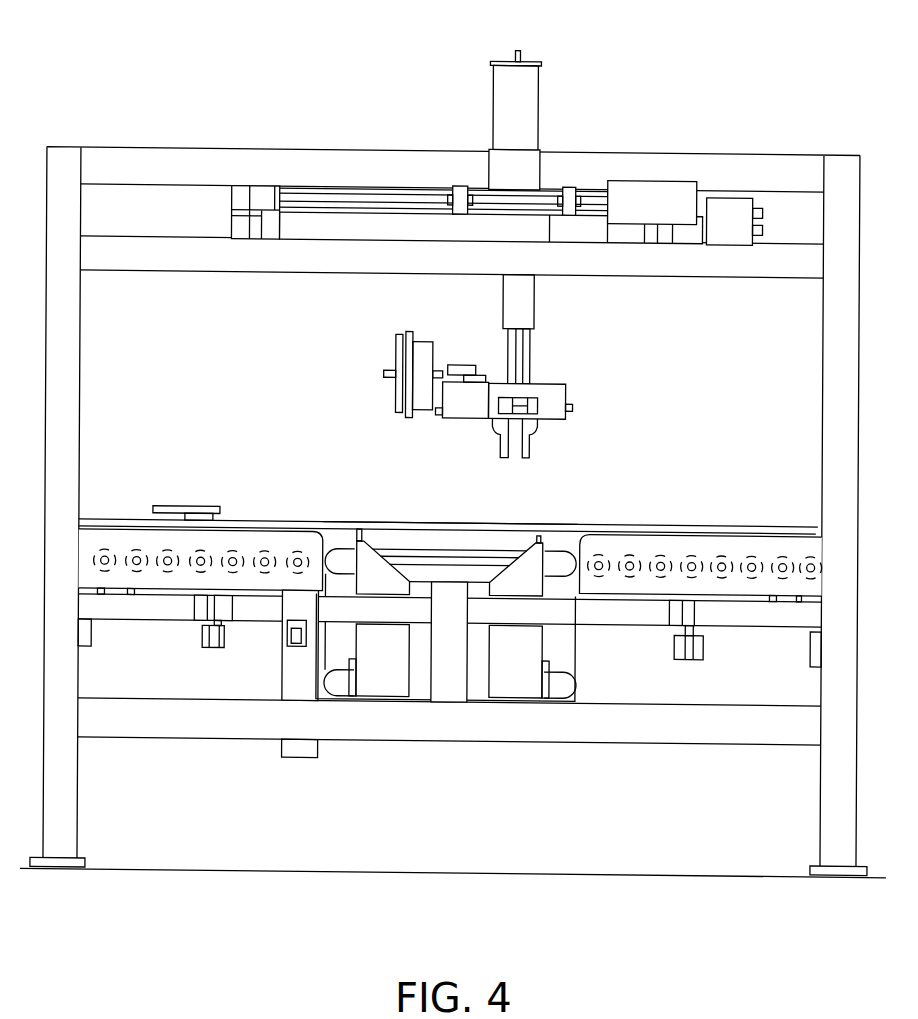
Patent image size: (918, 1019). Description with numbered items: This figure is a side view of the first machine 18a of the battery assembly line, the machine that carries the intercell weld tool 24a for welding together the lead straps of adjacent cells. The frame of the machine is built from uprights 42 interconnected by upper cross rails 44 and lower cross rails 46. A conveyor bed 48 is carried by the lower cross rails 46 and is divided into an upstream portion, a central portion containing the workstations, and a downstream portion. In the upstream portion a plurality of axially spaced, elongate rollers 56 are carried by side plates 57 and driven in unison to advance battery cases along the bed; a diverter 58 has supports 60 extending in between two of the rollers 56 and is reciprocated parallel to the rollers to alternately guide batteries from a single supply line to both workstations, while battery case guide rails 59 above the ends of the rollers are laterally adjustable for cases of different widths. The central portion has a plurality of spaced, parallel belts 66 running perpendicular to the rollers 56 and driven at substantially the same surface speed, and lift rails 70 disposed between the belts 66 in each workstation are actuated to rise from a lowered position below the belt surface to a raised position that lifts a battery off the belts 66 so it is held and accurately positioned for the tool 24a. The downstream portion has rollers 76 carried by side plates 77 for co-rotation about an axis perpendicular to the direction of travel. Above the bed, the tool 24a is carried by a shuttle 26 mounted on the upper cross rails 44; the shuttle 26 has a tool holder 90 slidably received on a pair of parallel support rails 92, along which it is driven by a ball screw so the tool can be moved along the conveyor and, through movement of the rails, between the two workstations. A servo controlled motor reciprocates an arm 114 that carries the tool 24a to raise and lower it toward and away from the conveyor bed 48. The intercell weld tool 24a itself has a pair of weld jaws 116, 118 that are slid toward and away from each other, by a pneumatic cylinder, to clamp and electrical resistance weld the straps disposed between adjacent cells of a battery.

The first machine 18a is at (634, 62).
The support rails 92 is at (307, 193).
The shuttle 26 is at (405, 183).
The tool holder 90 is at (548, 155).
The upper cross rails 44 is at (742, 163).
The arm 114 is at (530, 345).
The intercell weld tool 24a is at (538, 398).
The weld jaw 116 is at (496, 435).
The weld jaw 118 is at (532, 435).
The diverter 58 is at (213, 477).
The rollers 56 is at (137, 543).
The supports 60 is at (216, 511).
The side plates 57 is at (275, 538).
The battery case guide rails 59 is at (375, 523).
The belts 66 is at (475, 593).
The lift rails 70 is at (477, 565).
The rollers 76 is at (633, 548).
The side plates 77 is at (683, 542).
The conveyor bed 48 is at (759, 524).
The lower cross rails 46 is at (732, 658).
The uprights 42 is at (68, 805).